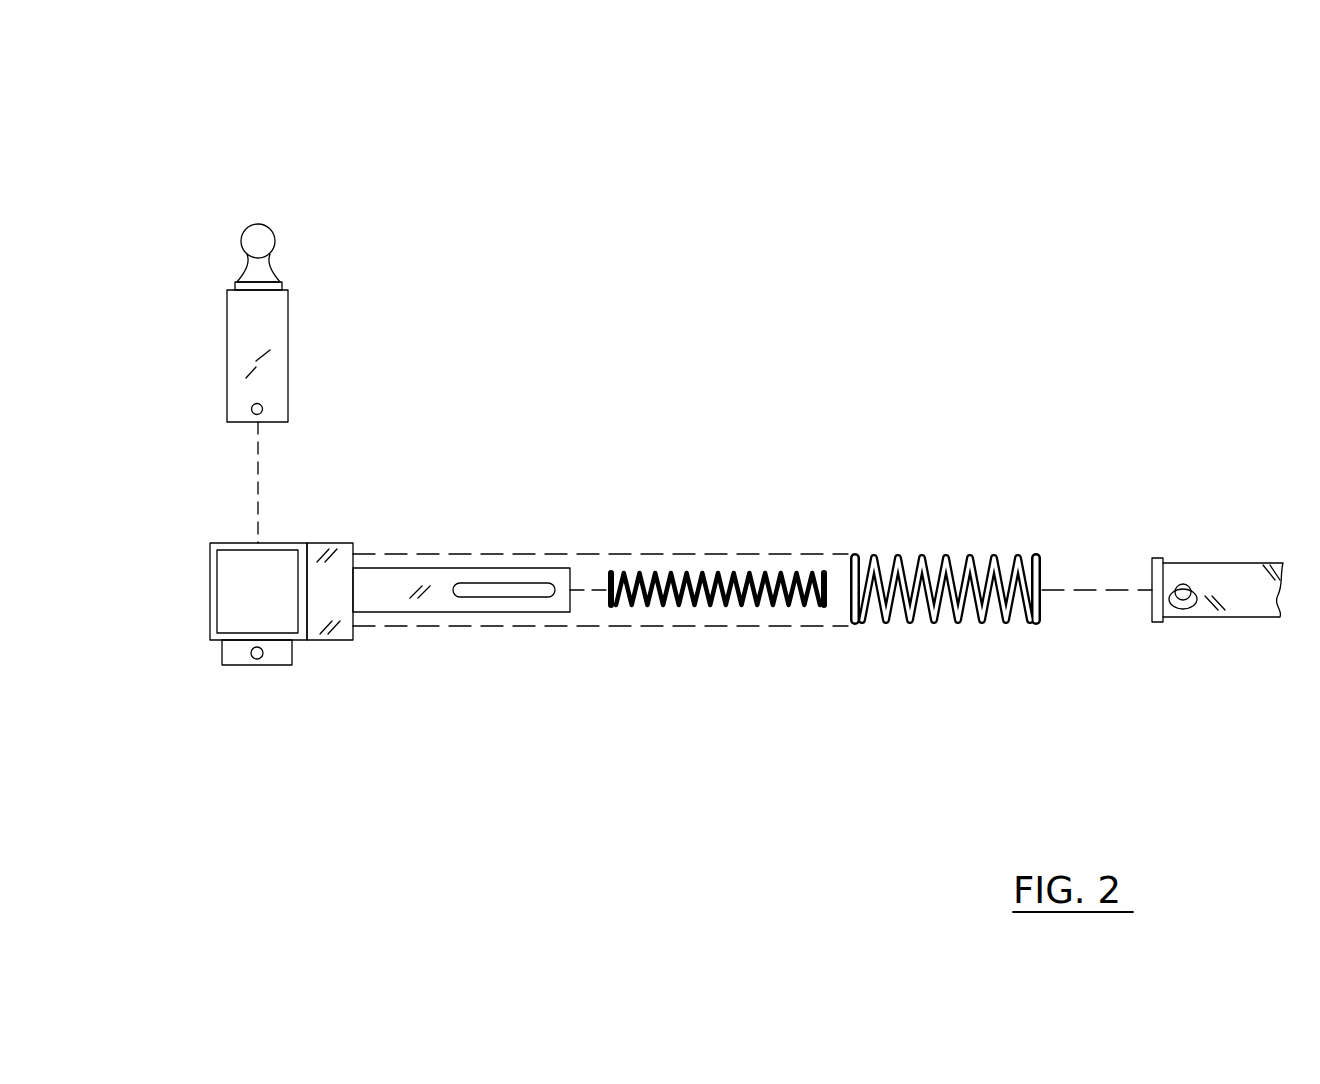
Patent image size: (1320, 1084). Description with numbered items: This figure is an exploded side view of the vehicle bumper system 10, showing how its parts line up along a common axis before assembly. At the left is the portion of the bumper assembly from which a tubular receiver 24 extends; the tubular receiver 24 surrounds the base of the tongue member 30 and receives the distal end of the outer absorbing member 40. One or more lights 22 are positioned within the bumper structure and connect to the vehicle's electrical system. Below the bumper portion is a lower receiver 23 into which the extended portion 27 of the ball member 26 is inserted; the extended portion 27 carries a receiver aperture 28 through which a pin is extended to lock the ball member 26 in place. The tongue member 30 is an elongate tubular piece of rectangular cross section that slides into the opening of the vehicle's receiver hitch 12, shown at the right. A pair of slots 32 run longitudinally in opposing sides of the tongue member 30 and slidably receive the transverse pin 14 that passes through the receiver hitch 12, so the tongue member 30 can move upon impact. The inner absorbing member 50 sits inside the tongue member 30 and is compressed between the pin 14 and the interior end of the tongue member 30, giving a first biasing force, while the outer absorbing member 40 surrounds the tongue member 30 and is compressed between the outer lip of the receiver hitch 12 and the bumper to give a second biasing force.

The vehicle bumper system 10 is at (1142, 195).
The receiver hitch 12 is at (1228, 577).
The pin 14 is at (1183, 595).
The lights 22 is at (228, 588).
The lower receiver 23 is at (278, 658).
The tubular receiver 24 is at (345, 630).
The ball member 26 is at (267, 240).
The extended portion 27 is at (282, 362).
The receiver aperture 28 is at (263, 409).
The tongue member 30 is at (523, 577).
The slots 32 is at (540, 592).
The outer absorbing member 40 is at (977, 618).
The inner absorbing member 50 is at (703, 605).